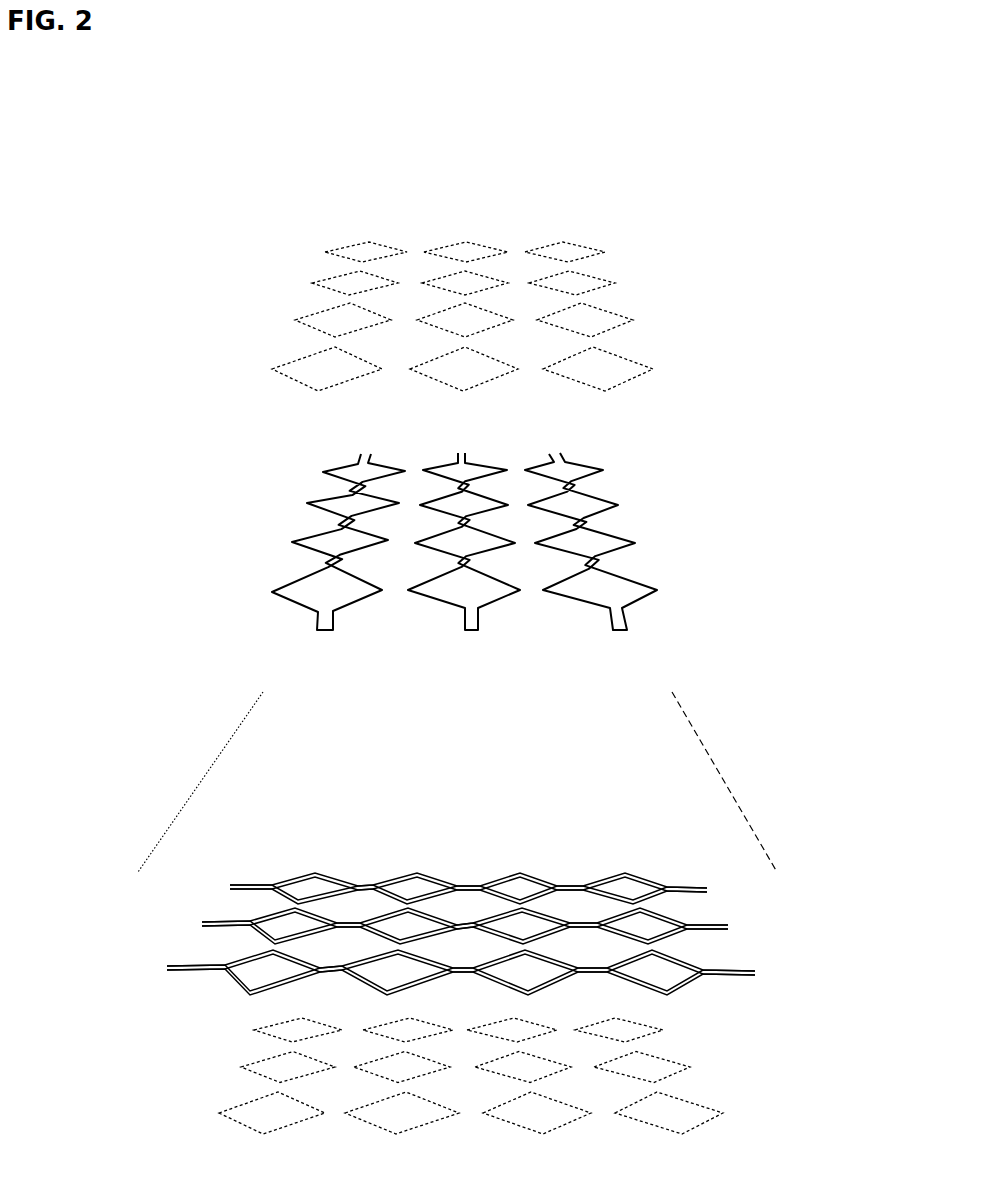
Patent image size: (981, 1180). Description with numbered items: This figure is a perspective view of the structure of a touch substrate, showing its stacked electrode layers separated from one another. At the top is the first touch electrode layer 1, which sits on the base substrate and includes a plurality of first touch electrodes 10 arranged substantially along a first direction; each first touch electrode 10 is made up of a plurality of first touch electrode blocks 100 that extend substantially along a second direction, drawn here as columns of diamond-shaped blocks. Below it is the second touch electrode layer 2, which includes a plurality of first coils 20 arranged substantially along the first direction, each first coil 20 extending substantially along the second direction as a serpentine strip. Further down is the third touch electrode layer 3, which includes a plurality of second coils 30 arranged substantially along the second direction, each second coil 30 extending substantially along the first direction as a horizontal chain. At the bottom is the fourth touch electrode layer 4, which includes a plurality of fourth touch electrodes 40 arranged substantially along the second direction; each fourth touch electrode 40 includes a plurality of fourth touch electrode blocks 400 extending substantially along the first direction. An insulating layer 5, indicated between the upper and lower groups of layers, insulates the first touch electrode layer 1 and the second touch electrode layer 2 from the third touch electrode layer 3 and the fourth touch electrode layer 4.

The first touch electrode layer 1 is at (485, 350).
The first touch electrode 10 is at (485, 335).
The first touch electrode block 100 is at (672, 403).
The second touch electrode layer 2 is at (464, 576).
The first coil 20 is at (622, 642).
The third touch electrode layer 3 is at (496, 934).
The second coil 30 is at (818, 974).
The fourth touch electrode layer 4 is at (410, 1082).
The fourth touch electrode 40 is at (421, 1082).
The fourth touch electrode block 400 is at (471, 1075).
The insulating layer 5 is at (480, 782).